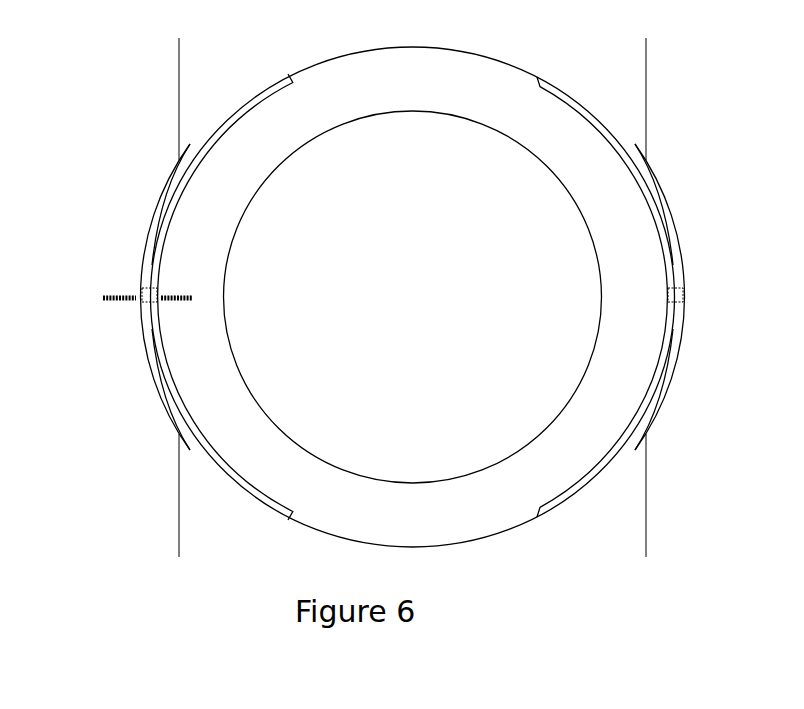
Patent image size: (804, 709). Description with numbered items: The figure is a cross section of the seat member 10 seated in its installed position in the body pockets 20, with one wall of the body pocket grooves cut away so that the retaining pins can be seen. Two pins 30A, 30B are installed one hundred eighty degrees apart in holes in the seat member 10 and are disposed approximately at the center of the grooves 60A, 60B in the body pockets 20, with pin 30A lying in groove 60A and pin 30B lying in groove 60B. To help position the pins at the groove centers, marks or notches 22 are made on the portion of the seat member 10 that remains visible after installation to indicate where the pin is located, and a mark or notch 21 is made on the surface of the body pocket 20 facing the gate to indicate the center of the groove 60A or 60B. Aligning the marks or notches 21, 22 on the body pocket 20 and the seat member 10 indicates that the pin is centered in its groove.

The seat member 10 is at (237, 191).
The body pockets 20 is at (157, 96).
The mark or notch 21 is at (117, 293).
The marks or notches 22 is at (175, 293).
The pin 30A is at (148, 300).
The pin 30B is at (676, 303).
The groove 60A is at (165, 175).
The groove 60B is at (681, 267).